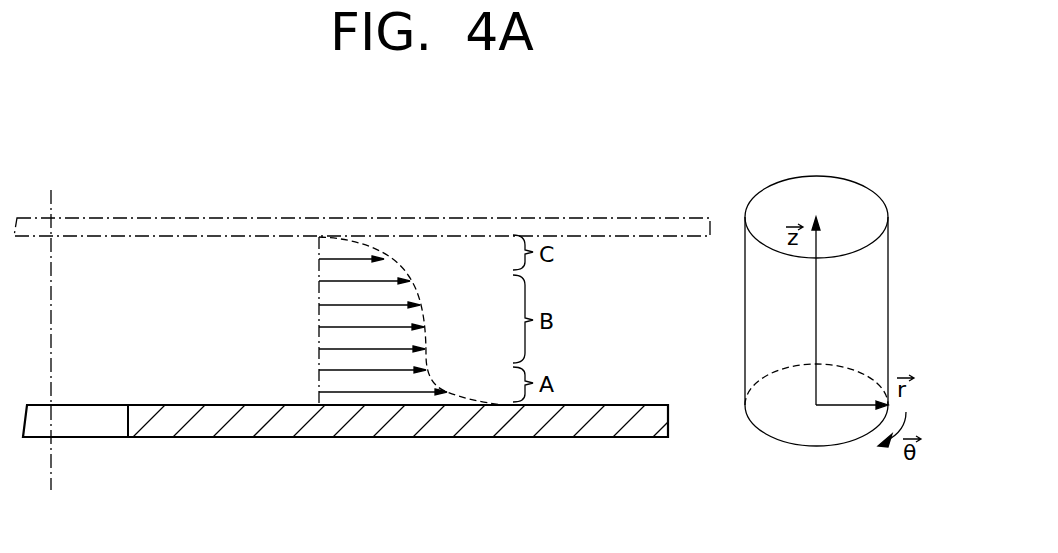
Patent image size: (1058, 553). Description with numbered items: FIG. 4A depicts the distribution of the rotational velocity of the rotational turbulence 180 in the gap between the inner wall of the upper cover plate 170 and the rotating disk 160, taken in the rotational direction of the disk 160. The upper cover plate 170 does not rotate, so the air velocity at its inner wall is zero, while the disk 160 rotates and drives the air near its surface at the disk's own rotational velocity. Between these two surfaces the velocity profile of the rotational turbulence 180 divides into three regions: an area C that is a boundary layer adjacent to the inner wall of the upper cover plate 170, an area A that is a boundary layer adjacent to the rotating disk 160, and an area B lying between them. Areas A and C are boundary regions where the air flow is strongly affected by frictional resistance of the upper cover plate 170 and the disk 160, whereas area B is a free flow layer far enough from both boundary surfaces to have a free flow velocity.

The disk 160 is at (392, 437).
The upper cover plate 170 is at (598, 218).
The rotational turbulence 180 is at (319, 308).